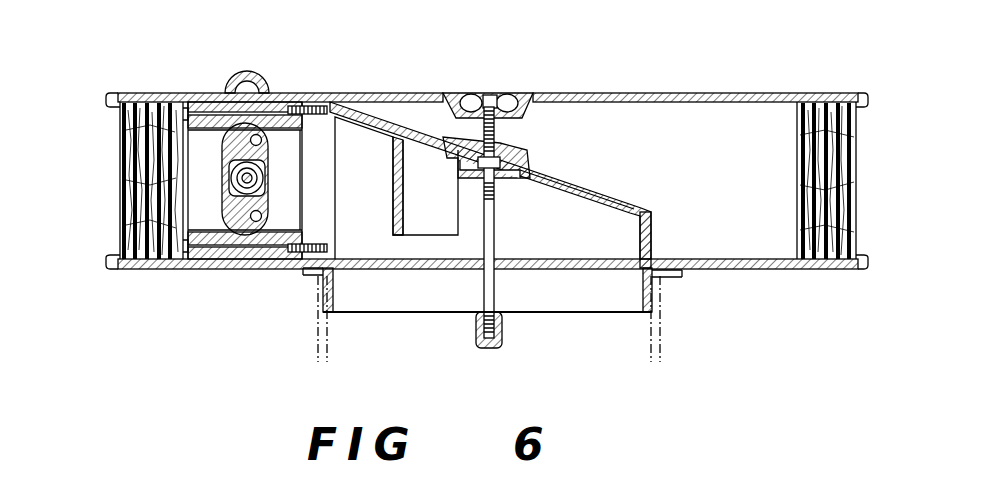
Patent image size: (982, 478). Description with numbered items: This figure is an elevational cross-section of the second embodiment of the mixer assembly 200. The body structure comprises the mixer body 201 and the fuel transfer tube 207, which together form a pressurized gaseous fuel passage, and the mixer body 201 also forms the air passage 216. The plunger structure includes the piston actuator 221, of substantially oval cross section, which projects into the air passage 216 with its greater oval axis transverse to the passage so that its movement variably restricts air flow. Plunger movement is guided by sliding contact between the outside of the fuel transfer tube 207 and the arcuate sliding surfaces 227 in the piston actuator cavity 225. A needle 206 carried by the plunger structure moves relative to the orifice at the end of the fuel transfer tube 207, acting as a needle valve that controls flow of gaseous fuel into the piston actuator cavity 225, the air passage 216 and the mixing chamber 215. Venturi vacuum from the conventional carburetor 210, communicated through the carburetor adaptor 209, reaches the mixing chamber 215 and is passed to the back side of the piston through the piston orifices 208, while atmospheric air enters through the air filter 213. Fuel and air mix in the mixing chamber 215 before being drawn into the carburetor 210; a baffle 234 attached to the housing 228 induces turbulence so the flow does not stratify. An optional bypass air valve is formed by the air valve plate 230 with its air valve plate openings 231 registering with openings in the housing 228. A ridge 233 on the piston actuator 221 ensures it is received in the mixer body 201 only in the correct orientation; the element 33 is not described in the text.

The ring 33 is at (252, 49).
The mixer assembly 200 is at (618, 86).
The mixer body 201 is at (262, 104).
The needle 206 is at (232, 134).
The fuel transfer tube 207 is at (244, 170).
The piston orifices 208 is at (259, 136).
The carburetor adaptor 209 is at (334, 300).
The carburetor 210 is at (318, 336).
The air filter 213 is at (848, 198).
The mixing chamber 215 is at (381, 197).
The air passage 216 is at (215, 190).
The piston actuator 221 is at (233, 222).
The piston actuator cavity 225 is at (233, 200).
The arcuate sliding surfaces 227 is at (230, 168).
The housing 228 is at (652, 238).
The air valve plate 230 is at (551, 172).
The air valve plate openings 231 is at (604, 193).
The ridge 233 is at (276, 178).
The baffle 234 is at (394, 222).